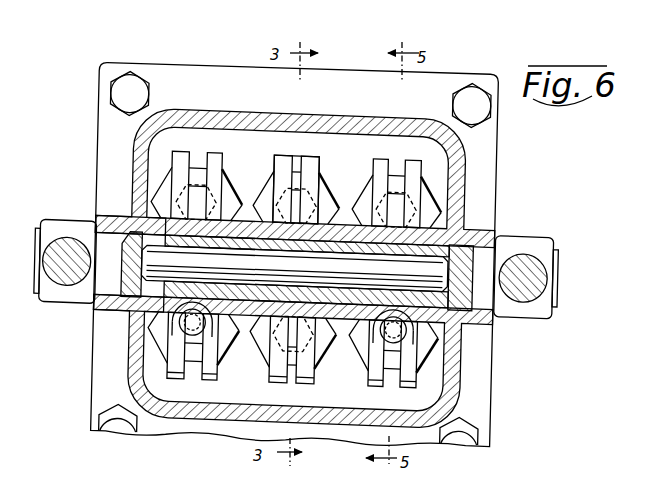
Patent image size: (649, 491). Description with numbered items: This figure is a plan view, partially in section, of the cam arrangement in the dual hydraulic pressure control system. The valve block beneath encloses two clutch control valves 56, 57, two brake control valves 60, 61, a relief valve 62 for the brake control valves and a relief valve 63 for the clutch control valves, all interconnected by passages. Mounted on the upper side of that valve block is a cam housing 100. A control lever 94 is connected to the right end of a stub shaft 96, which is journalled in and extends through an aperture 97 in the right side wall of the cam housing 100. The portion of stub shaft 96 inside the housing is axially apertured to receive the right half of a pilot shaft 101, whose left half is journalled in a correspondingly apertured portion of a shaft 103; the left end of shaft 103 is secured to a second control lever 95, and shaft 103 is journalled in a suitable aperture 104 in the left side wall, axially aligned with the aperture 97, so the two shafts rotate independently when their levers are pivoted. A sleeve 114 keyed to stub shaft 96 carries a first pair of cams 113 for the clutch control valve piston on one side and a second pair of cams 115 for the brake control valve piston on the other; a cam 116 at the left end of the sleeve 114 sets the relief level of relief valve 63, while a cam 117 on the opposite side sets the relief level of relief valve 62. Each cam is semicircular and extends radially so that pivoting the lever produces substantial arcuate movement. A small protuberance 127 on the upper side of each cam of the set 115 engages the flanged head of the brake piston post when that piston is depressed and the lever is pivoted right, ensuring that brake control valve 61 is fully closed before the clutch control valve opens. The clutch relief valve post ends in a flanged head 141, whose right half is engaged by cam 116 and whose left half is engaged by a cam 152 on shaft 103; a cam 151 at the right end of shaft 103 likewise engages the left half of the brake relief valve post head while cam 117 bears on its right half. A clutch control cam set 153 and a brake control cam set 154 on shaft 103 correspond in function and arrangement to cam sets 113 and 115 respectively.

The clutch control valve 56 is at (157, 180).
The clutch control valve 57 is at (437, 187).
The brake control valve 60 is at (155, 348).
The brake control valve 61 is at (429, 368).
The relief valve 62 is at (334, 349).
The relief valve 63 is at (305, 149).
The control lever 94 is at (541, 272).
The second control lever 95 is at (54, 252).
The stub shaft 96 is at (478, 222).
The aperture 97 is at (517, 238).
The cam housing 100 is at (250, 103).
The pilot shaft 101 is at (294, 268).
The shaft 103 is at (105, 312).
The aperture 104 is at (98, 233).
The first pair of cams 113 is at (415, 165).
The sleeve 114 is at (349, 227).
The second pair of cams 115 is at (407, 383).
The cam 116 is at (322, 158).
The cam 117 is at (307, 382).
The protuberance 127 is at (418, 312).
The flanged head 141 is at (266, 192).
The cam 151 is at (277, 382).
The cam 152 is at (281, 157).
The clutch control cam set 153 is at (187, 160).
The brake control cam set 154 is at (174, 378).